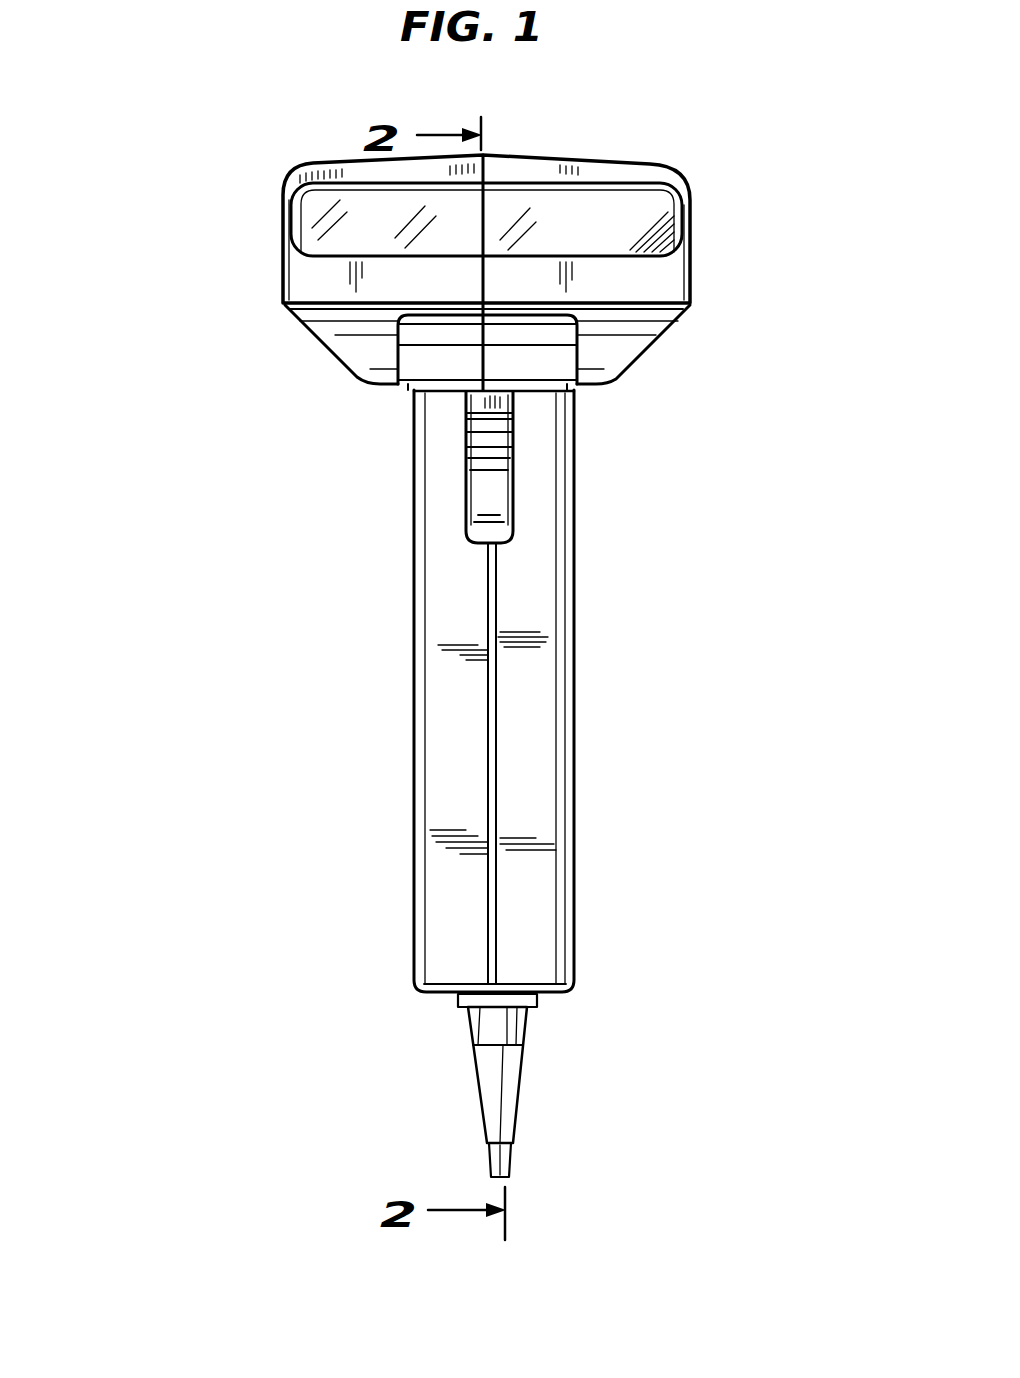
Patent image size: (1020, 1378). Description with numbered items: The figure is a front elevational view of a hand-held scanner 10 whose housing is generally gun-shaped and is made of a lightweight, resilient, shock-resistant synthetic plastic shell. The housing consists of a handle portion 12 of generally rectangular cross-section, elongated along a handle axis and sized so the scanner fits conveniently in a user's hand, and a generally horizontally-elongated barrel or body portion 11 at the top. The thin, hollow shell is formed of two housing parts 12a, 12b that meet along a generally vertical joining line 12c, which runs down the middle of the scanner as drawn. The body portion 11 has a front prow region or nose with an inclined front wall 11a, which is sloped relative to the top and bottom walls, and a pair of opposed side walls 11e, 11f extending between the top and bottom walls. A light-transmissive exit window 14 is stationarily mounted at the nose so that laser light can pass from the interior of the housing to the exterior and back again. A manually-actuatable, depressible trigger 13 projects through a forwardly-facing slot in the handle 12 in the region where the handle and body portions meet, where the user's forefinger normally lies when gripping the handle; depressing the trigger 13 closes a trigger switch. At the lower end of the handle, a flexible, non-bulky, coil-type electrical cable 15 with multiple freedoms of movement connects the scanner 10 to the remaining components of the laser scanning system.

The scanner 10 is at (222, 403).
The body portion 11 is at (716, 317).
The inclined front wall 11a is at (628, 345).
The side wall 11e is at (692, 270).
The side wall 11f is at (283, 278).
The handle portion 12 is at (585, 744).
The housing part 12a is at (550, 808).
The housing part 12b is at (440, 820).
The joining line 12c is at (493, 928).
The trigger 13 is at (500, 481).
The exit window 14 is at (680, 205).
The electrical cable 15 is at (521, 1100).